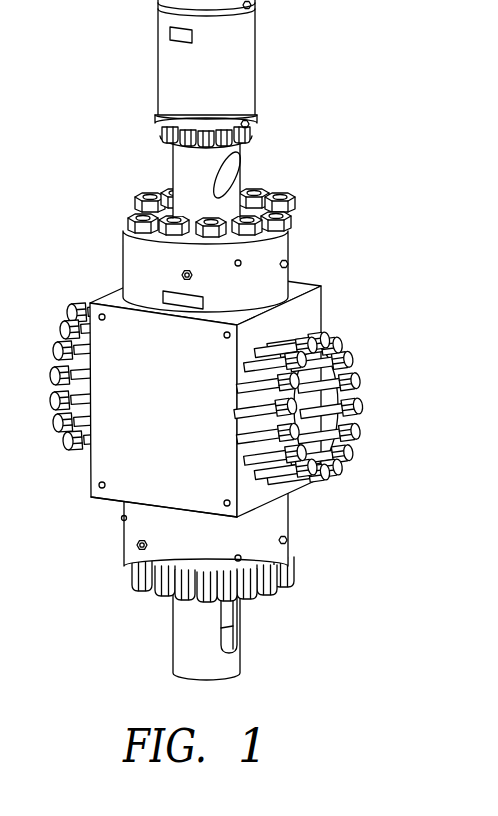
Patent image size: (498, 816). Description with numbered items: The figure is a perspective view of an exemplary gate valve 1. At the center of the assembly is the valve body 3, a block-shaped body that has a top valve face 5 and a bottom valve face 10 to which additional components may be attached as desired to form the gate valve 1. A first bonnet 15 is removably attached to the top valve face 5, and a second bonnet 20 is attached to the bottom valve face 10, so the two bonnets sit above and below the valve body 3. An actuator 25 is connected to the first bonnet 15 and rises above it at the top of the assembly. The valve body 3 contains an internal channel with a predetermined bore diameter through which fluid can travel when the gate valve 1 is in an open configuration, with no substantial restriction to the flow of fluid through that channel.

The gate valve 1 is at (386, 215).
The valve body 3 is at (323, 307).
The top valve face 5 is at (105, 297).
The bottom valve face 10 is at (105, 498).
The first bonnet 15 is at (290, 243).
The second bonnet 20 is at (290, 512).
The actuator 25 is at (258, 44).